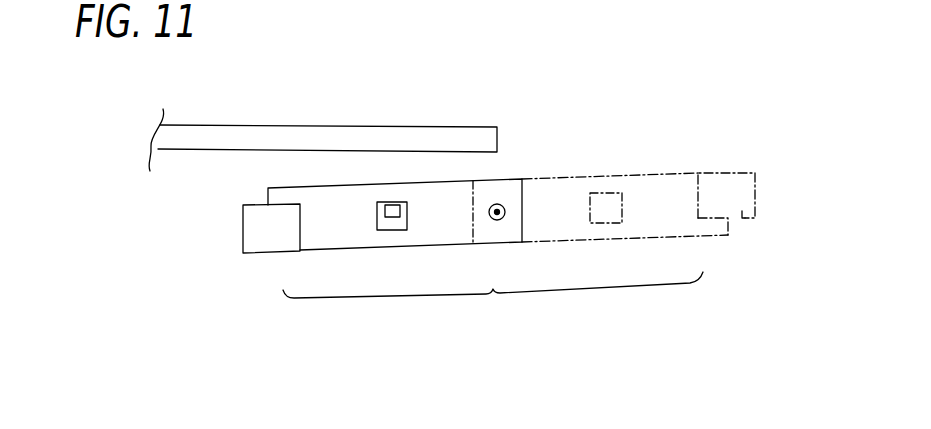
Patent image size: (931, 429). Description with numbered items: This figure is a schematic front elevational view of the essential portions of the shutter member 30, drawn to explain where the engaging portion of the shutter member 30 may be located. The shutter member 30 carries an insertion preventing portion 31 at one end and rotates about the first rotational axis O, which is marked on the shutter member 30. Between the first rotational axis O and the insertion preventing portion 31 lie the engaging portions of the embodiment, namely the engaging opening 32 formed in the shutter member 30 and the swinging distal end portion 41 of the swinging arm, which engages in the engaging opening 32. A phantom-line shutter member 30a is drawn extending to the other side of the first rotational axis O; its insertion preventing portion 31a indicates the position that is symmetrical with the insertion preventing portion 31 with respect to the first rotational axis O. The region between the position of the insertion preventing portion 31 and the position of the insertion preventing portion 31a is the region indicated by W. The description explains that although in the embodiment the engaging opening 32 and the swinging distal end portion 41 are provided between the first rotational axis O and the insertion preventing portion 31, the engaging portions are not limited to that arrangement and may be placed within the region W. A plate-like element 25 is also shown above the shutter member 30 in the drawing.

The guide plate 25 is at (368, 138).
The shutter member 30 is at (340, 178).
The shutter member 30a is at (626, 169).
The insertion preventing portion 31 is at (261, 222).
The insertion preventing portion 31a is at (742, 213).
The engaging opening 32 is at (383, 230).
The swinging distal end portion 41 is at (392, 203).
The first rotational axis O is at (500, 205).
The region W is at (493, 302).